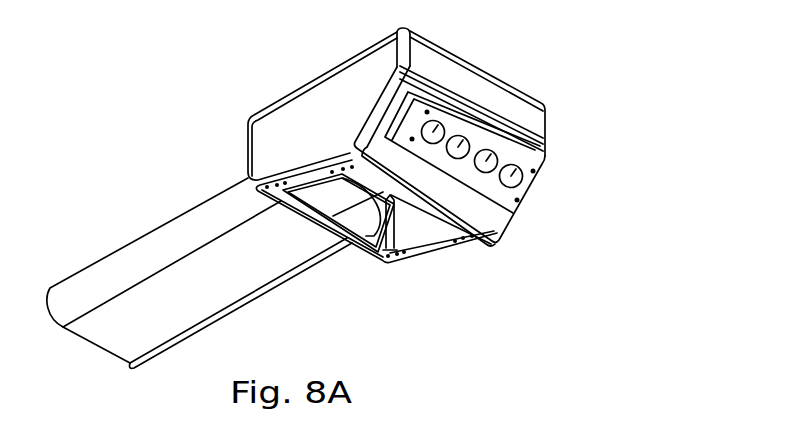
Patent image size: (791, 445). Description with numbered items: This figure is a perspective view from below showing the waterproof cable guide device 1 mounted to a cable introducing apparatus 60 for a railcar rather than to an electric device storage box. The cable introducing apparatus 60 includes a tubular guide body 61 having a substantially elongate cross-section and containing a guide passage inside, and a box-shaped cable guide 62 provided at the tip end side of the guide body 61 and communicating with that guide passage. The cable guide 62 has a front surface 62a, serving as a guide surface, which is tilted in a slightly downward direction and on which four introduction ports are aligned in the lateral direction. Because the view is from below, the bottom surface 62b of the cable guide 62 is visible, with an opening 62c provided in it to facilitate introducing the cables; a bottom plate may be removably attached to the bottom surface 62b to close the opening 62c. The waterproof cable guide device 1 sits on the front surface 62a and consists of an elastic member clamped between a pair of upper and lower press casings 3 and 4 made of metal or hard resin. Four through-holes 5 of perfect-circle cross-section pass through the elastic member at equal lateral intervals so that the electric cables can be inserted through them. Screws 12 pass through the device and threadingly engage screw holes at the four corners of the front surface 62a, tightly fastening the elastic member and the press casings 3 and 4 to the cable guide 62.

The waterproof cable guide device 1 is at (472, 162).
The press casing 3 is at (537, 183).
The press casing 4 is at (529, 202).
The through-holes 5 is at (438, 124).
The screws 12 is at (412, 140).
The cable introducing apparatus 60 is at (199, 222).
The guide body 61 is at (153, 238).
The cable guide 62 is at (286, 98).
The front surface 62a is at (502, 228).
The bottom surface 62b is at (362, 252).
The opening 62c is at (415, 235).